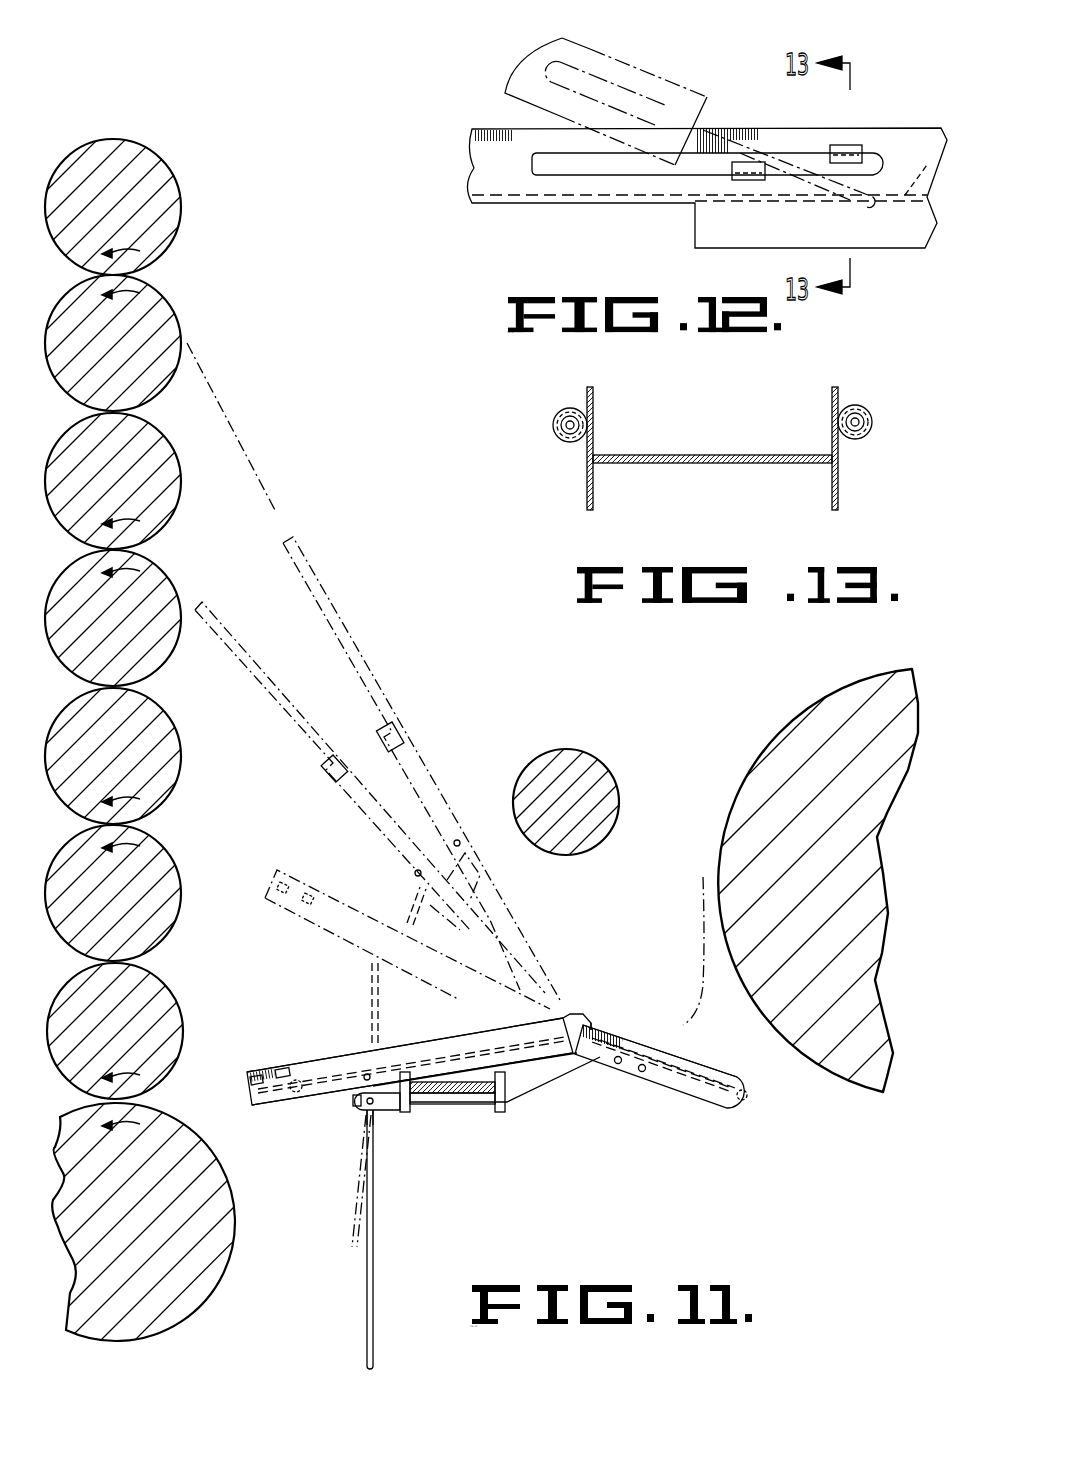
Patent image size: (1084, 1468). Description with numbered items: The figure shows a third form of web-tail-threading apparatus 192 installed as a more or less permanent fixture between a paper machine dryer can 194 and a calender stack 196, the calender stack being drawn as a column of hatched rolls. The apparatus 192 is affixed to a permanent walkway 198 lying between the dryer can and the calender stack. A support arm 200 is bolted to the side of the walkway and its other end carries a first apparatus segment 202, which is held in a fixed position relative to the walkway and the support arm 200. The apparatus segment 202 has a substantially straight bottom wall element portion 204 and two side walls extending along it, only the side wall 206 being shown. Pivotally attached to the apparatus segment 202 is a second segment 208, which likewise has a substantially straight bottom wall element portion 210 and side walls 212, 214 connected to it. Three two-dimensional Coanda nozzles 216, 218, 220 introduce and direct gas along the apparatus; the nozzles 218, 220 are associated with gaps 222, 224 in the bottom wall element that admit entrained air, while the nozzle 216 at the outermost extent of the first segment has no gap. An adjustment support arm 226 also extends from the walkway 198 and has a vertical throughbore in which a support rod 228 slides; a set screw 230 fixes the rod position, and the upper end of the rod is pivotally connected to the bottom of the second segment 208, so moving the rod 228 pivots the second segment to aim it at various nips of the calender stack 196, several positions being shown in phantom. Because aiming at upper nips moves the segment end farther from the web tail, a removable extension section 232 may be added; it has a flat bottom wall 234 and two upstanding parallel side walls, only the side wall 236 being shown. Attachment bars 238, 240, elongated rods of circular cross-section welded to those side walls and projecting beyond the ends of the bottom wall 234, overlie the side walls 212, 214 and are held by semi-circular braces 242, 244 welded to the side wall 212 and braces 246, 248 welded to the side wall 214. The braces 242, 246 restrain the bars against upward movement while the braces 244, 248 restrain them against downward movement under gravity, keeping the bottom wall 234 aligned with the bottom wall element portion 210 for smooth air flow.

In FIG. 11, the apparatus 192 is at (503, 1160).
In FIG. 11, the paper machine dryer can 194 is at (747, 727).
In FIG. 11, the calender stack 196 is at (190, 292).
In FIG. 11, the permanent walkway 198 is at (457, 1093).
In FIG. 11, the support arm 200 is at (547, 1095).
In FIG. 11, the apparatus segment 202 is at (697, 1063).
In FIG. 11, the bottom wall element portion 204 is at (675, 1070).
In FIG. 11, the side wall 206 is at (630, 1037).
In FIG. 11, the second segment 208 is at (312, 1066).
In FIG. 12, the bottom wall element portion 210 is at (923, 165).
In FIG. 13, the bottom wall element portion 210 is at (693, 453).
In FIG. 11, the bottom wall element portion 210 is at (446, 1045).
In FIG. 12, the side wall 212 is at (921, 128).
In FIG. 13, the side wall 212 is at (840, 448).
In FIG. 11, the side wall 212 is at (355, 1060).
In FIG. 13, the side wall 214 is at (585, 450).
In FIG. 11, the Coanda nozzle 216 is at (748, 1097).
In FIG. 11, the Coanda nozzle 218 is at (547, 1012).
In FIG. 11, the Coanda nozzle 220 is at (283, 1072).
In FIG. 11, the gap 222 is at (578, 1012).
In FIG. 11, the gap 224 is at (312, 1094).
In FIG. 11, the adjustment support arm 226 is at (385, 1112).
In FIG. 11, the support rod 228 is at (375, 1273).
In FIG. 11, the set screw 230 is at (356, 1107).
In FIG. 12, the extension section 232 is at (485, 130).
In FIG. 11, the extension section 232 is at (327, 595).
In FIG. 12, the flat bottom wall 234 is at (517, 207).
In FIG. 12, the side wall 236 is at (508, 130).
In FIG. 12, the attachment bar 238 is at (625, 168).
In FIG. 13, the attachment bar 238 is at (872, 430).
In FIG. 13, the attachment bar 240 is at (553, 418).
In FIG. 12, the brace 242 is at (852, 145).
In FIG. 13, the brace 242 is at (860, 410).
In FIG. 12, the brace 244 is at (751, 181).
In FIG. 13, the brace 244 is at (868, 435).
In FIG. 11, the brace 244 is at (255, 1081).
In FIG. 13, the brace 246 is at (566, 410).
In FIG. 13, the brace 248 is at (562, 440).